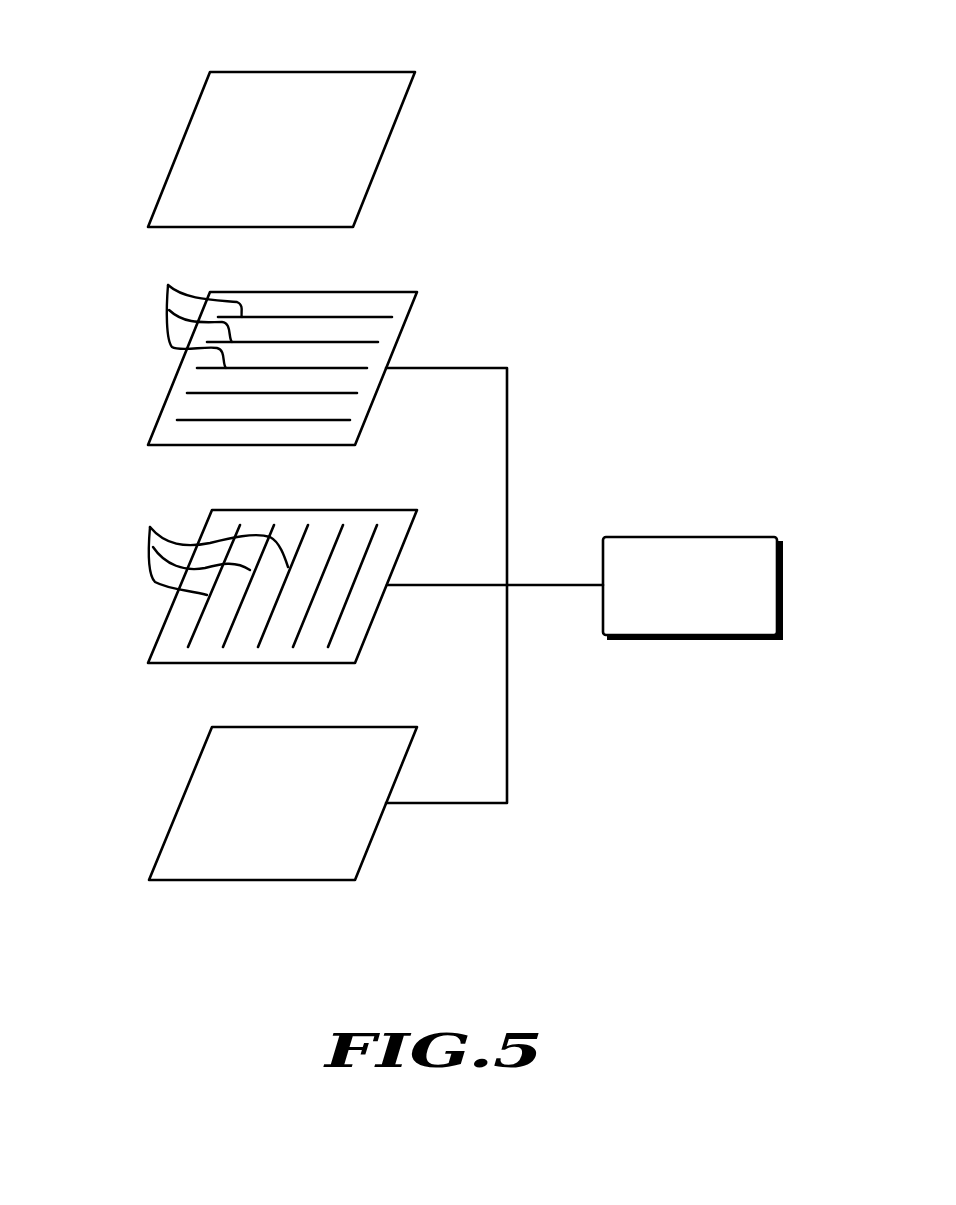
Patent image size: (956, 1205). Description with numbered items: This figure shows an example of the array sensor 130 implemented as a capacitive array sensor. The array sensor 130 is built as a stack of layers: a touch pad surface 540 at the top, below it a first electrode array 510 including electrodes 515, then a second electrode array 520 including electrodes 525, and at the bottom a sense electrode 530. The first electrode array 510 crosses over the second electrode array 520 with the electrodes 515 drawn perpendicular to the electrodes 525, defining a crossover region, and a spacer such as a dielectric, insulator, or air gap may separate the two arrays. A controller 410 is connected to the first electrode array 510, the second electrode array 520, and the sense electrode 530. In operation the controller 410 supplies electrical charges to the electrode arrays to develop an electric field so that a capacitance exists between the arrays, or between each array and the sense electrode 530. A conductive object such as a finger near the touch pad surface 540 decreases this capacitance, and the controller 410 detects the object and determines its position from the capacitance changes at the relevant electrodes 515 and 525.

The array sensor 130 is at (655, 105).
The controller 410 is at (693, 533).
The first electrode array 510 is at (160, 415).
The electrodes 515 is at (194, 308).
The second electrode array 520 is at (159, 634).
The electrodes 525 is at (204, 541).
The sense electrode 530 is at (181, 802).
The touch pad surface 540 is at (180, 148).